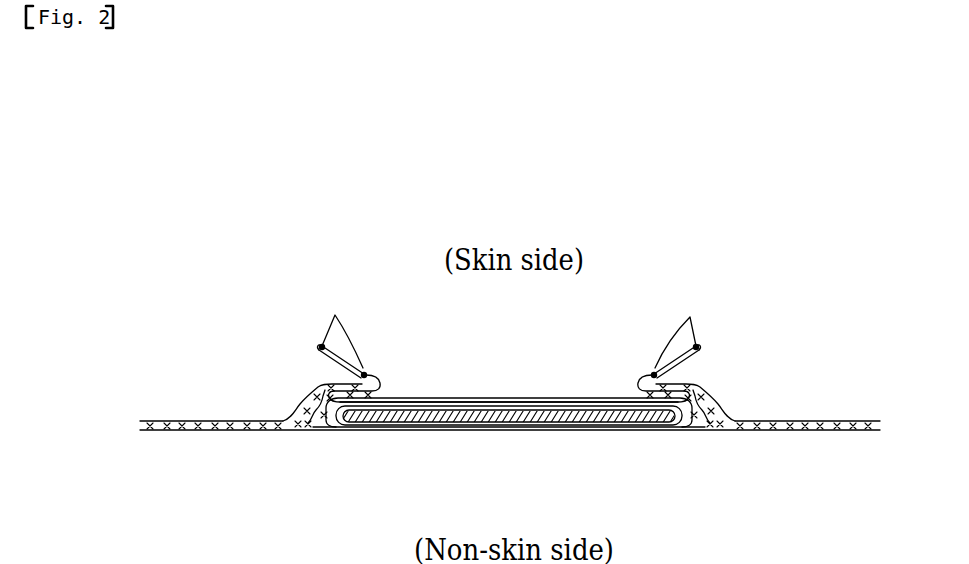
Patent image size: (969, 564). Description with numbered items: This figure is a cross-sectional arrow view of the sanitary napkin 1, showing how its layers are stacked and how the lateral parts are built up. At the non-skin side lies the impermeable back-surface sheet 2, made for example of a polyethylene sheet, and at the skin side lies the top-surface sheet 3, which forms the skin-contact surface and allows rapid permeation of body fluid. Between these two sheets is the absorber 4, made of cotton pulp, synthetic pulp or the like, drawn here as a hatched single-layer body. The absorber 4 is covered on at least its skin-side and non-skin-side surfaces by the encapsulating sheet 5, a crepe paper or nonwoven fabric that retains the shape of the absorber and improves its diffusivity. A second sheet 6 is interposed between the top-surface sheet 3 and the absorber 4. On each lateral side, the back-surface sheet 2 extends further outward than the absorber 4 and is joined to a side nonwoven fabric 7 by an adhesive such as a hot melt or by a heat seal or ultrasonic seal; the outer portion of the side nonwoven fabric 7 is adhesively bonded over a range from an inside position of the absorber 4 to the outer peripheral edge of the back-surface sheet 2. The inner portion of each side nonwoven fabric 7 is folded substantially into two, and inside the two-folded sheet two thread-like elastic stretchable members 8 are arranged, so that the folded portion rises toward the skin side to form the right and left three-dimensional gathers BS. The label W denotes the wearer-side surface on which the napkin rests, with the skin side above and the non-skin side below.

The sanitary napkin 1 is at (717, 274).
The back-surface sheet 2 is at (442, 431).
The top-surface sheet 3 is at (512, 398).
The absorber 4 is at (488, 421).
The encapsulating sheet 5 is at (462, 403).
The second sheet 6 is at (588, 403).
The side nonwoven fabric 7 is at (317, 385).
The thread-like elastic stretchable member 8 is at (335, 316).
The three-dimensional gather BS is at (363, 344).
The wearer's garment W is at (193, 412).